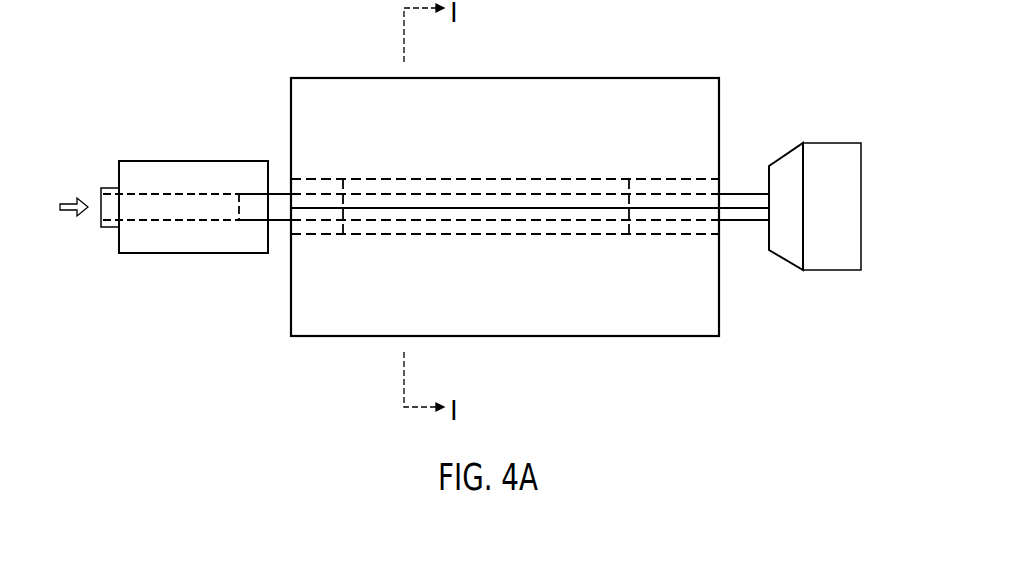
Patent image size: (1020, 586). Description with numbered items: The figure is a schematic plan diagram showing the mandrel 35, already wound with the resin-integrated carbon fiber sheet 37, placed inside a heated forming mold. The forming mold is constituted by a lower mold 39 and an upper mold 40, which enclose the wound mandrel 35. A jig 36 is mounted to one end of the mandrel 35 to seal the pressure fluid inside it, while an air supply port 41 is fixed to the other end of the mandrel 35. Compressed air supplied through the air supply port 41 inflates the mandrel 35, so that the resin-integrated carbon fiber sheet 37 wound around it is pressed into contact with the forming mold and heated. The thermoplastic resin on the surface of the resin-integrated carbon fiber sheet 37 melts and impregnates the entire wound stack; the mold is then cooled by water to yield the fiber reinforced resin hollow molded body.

The mandrel 35 is at (742, 193).
The jig 36 is at (831, 143).
The resin-integrated carbon fiber sheet 37 is at (522, 223).
The lower mold 39 is at (627, 78).
The upper mold 40 is at (632, 336).
The air supply port 41 is at (189, 161).